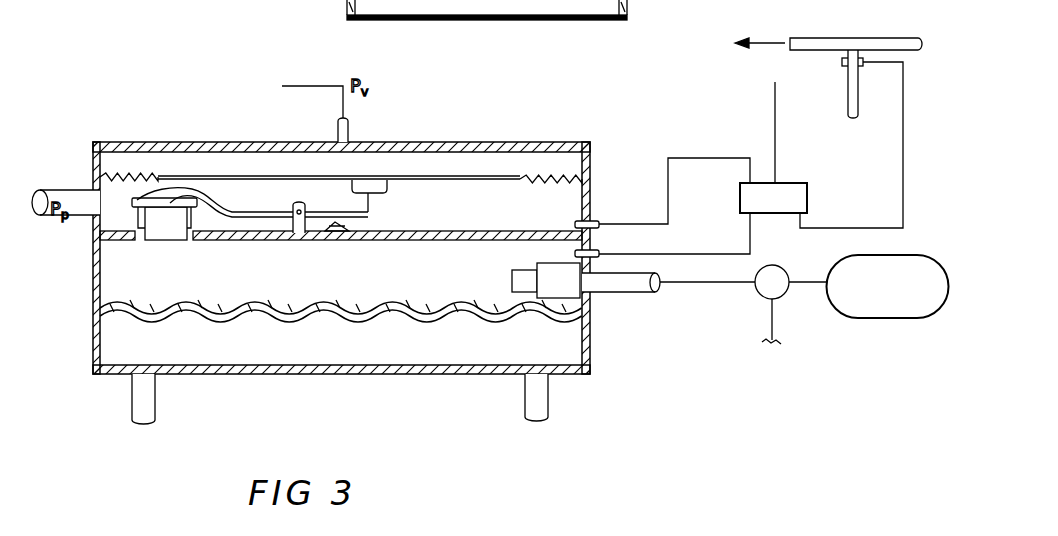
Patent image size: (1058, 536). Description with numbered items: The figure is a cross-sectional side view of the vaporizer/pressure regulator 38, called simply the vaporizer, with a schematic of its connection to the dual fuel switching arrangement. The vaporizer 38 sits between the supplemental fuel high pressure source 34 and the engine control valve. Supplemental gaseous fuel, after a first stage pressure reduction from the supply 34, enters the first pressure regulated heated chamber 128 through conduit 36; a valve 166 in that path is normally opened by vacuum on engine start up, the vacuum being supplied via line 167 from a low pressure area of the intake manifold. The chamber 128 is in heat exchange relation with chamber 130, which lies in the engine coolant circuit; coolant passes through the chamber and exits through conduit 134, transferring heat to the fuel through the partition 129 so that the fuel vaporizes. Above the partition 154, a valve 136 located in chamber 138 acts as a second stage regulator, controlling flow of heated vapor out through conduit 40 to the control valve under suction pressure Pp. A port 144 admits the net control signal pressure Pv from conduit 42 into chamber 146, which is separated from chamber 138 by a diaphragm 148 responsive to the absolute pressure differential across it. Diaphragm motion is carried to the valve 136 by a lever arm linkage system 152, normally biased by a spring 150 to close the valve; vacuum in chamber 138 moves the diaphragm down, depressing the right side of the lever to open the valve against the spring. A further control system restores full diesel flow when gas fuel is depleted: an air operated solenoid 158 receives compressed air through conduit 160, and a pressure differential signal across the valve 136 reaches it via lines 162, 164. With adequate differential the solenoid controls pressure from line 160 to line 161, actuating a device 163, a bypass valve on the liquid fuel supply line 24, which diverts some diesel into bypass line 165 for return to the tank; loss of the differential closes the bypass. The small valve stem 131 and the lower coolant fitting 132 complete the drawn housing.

The liquid fuel supply line 24 is at (820, 40).
The supplemental fuel high pressure source 34 is at (896, 299).
The conduit 36 is at (606, 292).
The vaporizer/pressure regulator 38 is at (600, 118).
The conduit 40 is at (50, 190).
The conduit 42 is at (308, 87).
The first pressure regulated heated chamber 128 is at (154, 286).
The partition 129 is at (412, 322).
The chamber 130 is at (249, 361).
The valve member 131 is at (158, 238).
The outlet tube 132 is at (535, 405).
The conduit 134 is at (148, 405).
The valve 136 is at (190, 196).
The chamber 138 is at (496, 221).
The port 144 is at (350, 127).
The chamber 146 is at (516, 181).
The diaphragm 148 is at (155, 181).
The spring 150 is at (350, 229).
The lever arm linkage system 152 is at (318, 212).
The partition 154 is at (396, 243).
The air operated solenoid 158 is at (788, 213).
The conduit 160 is at (773, 108).
The line 161 is at (868, 226).
The line 162 is at (722, 252).
The device for reducing full flow of diesel fuel 163 is at (842, 63).
The line 164 is at (640, 222).
The bypass line 165 is at (850, 93).
The valve 166 is at (768, 288).
The line 167 is at (767, 328).